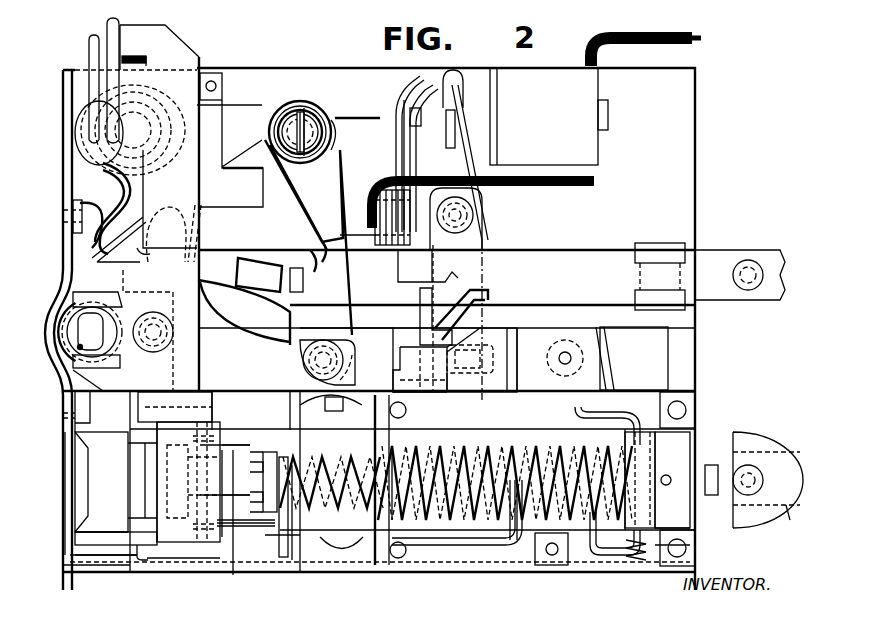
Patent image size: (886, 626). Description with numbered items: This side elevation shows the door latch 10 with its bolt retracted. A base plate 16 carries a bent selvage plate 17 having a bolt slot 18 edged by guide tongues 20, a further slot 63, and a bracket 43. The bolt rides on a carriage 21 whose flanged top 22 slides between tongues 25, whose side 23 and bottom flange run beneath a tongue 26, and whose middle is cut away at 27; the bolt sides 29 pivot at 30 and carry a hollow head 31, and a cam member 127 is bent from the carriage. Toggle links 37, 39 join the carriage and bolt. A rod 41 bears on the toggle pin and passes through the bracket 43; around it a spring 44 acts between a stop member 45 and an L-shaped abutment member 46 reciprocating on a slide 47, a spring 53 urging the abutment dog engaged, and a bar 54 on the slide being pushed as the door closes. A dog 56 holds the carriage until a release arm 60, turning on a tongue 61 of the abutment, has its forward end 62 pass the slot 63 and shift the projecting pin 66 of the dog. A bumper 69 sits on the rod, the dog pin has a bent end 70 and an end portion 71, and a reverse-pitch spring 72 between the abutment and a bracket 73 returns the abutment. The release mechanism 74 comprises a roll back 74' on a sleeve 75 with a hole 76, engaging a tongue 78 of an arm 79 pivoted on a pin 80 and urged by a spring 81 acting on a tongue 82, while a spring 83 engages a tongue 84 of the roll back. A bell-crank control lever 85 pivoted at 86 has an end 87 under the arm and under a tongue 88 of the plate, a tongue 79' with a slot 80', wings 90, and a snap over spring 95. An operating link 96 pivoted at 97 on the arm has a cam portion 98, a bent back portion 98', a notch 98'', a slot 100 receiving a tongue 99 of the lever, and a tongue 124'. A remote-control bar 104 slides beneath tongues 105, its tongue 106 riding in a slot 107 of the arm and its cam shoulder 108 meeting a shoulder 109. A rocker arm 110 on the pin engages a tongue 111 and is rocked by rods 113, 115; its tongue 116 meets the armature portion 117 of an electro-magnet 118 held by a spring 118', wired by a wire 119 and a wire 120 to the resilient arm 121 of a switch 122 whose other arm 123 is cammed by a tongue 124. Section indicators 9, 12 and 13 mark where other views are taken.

The section line 9- 9 is at (736, 115).
The latch 10 is at (318, 60).
The section line 12- 12 is at (380, 600).
The section line 13- 13 is at (283, 602).
The base plate 16 is at (693, 137).
The selvage plate 17 is at (63, 85).
The bolt opening or slot 18 is at (75, 532).
The guide tongues 20 is at (80, 544).
The carriage 21 is at (253, 537).
The flanged top 22 is at (228, 400).
The side 23 is at (176, 450).
The tongues 25 is at (288, 386).
The tongue 26 is at (113, 562).
The cut away portion 27 is at (295, 560).
The bolt sides 29 is at (298, 560).
The pivot 30 is at (335, 565).
The hollow head 31 is at (62, 487).
The toggle links 37 is at (223, 540).
The toggle links 39 is at (237, 503).
The rod 41 is at (712, 498).
The apertured bracket 43 is at (686, 528).
The spring 44 is at (495, 442).
The stop member 45 is at (263, 480).
The L-shaped abutment member 46 is at (645, 432).
The slide 47 is at (757, 437).
The spring 53 is at (640, 565).
The bar 54 is at (786, 510).
The dog 56 is at (290, 458).
The release arm 60 is at (440, 548).
The tongue 61 is at (510, 508).
The forward end 62 is at (682, 440).
The slot 63 is at (65, 563).
The projecting pin 66 is at (287, 553).
The bumper 69 is at (688, 547).
The bent end 70 is at (592, 548).
The end portion 71 is at (575, 408).
The spring 72 is at (487, 512).
The apertured bracket 73 is at (385, 578).
The release mechanism 74 is at (322, 214).
The roll back 74' is at (153, 260).
The sleeve 75 is at (70, 326).
The hole 76 is at (80, 347).
The tongue 78 is at (196, 222).
The arm 79 is at (229, 159).
The tongue 79' is at (167, 59).
The pin 80 is at (299, 124).
The slot 80' is at (140, 51).
The spring 81 is at (318, 102).
The tongue 82 is at (306, 244).
The spring 83 is at (112, 182).
The tongue 84 is at (75, 235).
The control lever 85 is at (72, 270).
The pivot 86 is at (165, 322).
The end 87 is at (236, 337).
The tongue 88 is at (612, 350).
The wings 90 is at (120, 363).
The snap over spring 95 is at (560, 378).
The operating link 96 is at (392, 335).
The pivot 97 is at (345, 352).
The cam portion 98 is at (455, 369).
The bent back portion 98' is at (468, 391).
The notch 98'' is at (516, 369).
The tongue 99 is at (498, 355).
The slot 100 is at (445, 347).
The bar 104 is at (725, 258).
The tongues 105 is at (672, 263).
The tongue 106 is at (290, 280).
The slot 107 is at (250, 258).
The cam shoulder 108 is at (458, 276).
The shoulder 109 is at (488, 296).
The rocker arm 110 is at (356, 160).
The tongue 111 is at (232, 176).
The rod 113 is at (107, 24).
The rod 115 is at (89, 55).
The tongue 116 is at (447, 128).
The armature bent over portion 117 is at (460, 96).
The electro-magnet 118 is at (491, 145).
The spring 118' is at (475, 219).
The wire 119 is at (624, 31).
The wire 120 is at (556, 188).
The resilient arm 121 is at (398, 95).
The switch 122 is at (403, 258).
The resilient arm 123 is at (408, 150).
The tongue 124 is at (391, 117).
The tongue 124' is at (314, 406).
The cam member 127 is at (345, 375).